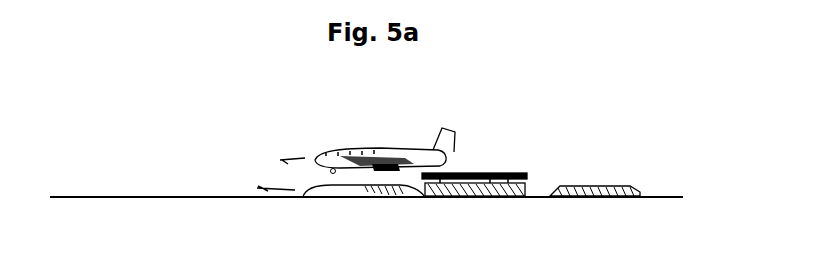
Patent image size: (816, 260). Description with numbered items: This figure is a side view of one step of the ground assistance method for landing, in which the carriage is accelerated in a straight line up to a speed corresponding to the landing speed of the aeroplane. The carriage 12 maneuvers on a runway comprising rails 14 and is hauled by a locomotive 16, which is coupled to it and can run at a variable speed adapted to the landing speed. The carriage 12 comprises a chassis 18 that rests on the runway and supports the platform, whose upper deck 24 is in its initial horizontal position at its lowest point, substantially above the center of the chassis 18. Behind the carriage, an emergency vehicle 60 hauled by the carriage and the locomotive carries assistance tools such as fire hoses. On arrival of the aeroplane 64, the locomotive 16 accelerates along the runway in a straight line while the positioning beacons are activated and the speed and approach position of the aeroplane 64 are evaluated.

The rails 14 is at (174, 197).
The aeroplane 64 is at (398, 148).
The locomotive 16 is at (355, 200).
The upper deck 24 is at (518, 173).
The chassis 18 is at (512, 182).
The carriage 12 is at (467, 204).
The emergency vehicle 60 is at (605, 185).